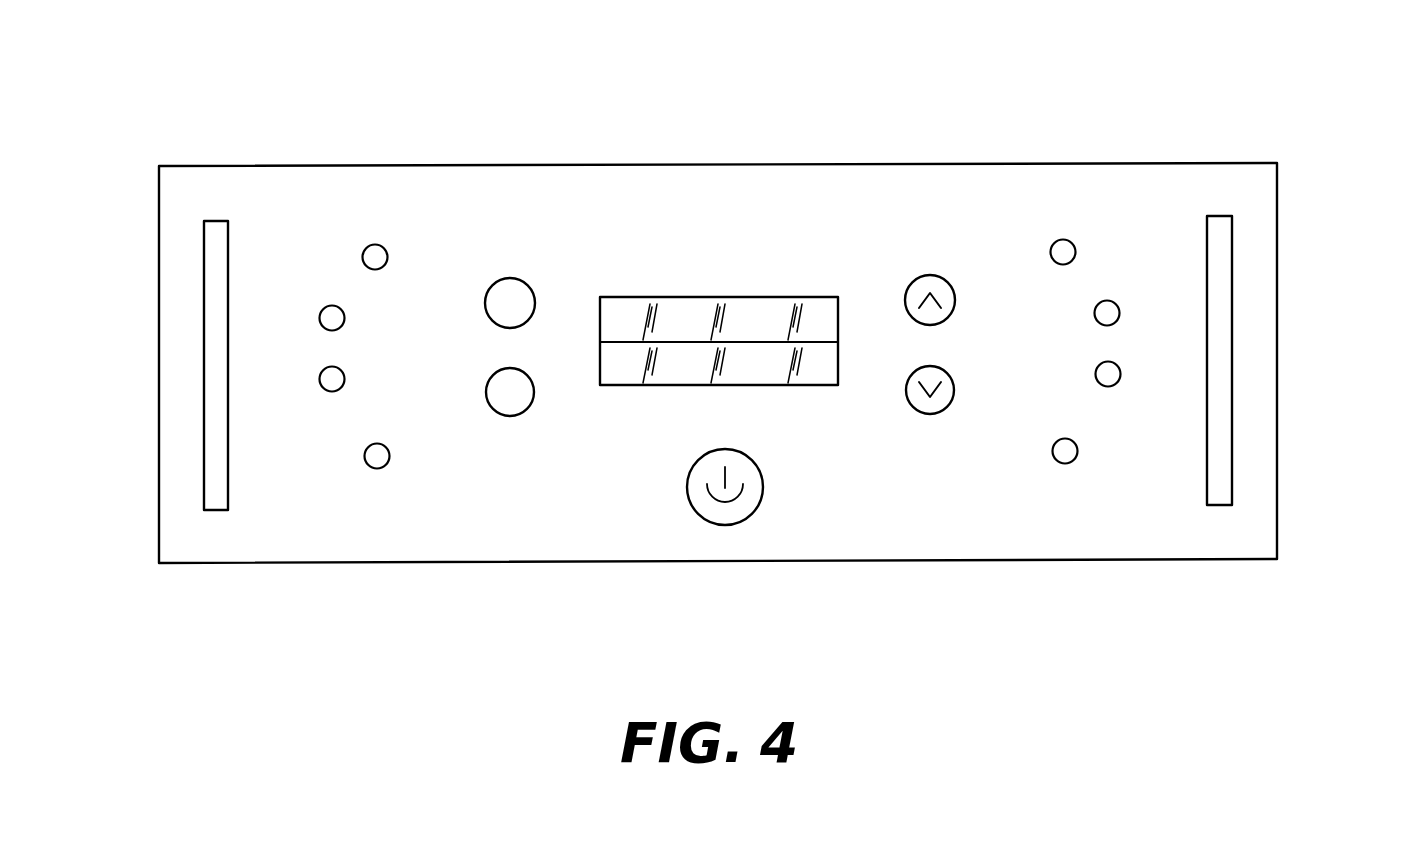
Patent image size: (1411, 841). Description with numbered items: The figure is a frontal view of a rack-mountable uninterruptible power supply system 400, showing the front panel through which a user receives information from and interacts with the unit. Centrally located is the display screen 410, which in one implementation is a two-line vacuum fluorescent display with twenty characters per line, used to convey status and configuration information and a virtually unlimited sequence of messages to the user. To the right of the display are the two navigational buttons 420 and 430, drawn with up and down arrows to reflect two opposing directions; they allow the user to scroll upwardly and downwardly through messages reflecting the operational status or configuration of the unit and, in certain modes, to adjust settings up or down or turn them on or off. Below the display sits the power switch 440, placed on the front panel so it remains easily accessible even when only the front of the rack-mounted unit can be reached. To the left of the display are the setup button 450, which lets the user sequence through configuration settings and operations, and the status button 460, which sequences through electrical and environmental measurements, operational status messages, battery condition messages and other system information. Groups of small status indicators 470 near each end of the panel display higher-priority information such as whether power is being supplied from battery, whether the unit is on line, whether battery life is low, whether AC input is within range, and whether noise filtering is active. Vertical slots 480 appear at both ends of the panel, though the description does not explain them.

The uninterruptible power supply system 400 is at (1277, 160).
The display screen 410 is at (698, 297).
The navigational button 420 is at (930, 275).
The navigational button 430 is at (937, 413).
The power switch 440 is at (707, 522).
The setup button 450 is at (513, 277).
The status button 460 is at (517, 415).
The status indicators 470 is at (403, 227).
The side panel slots 480 is at (205, 290).